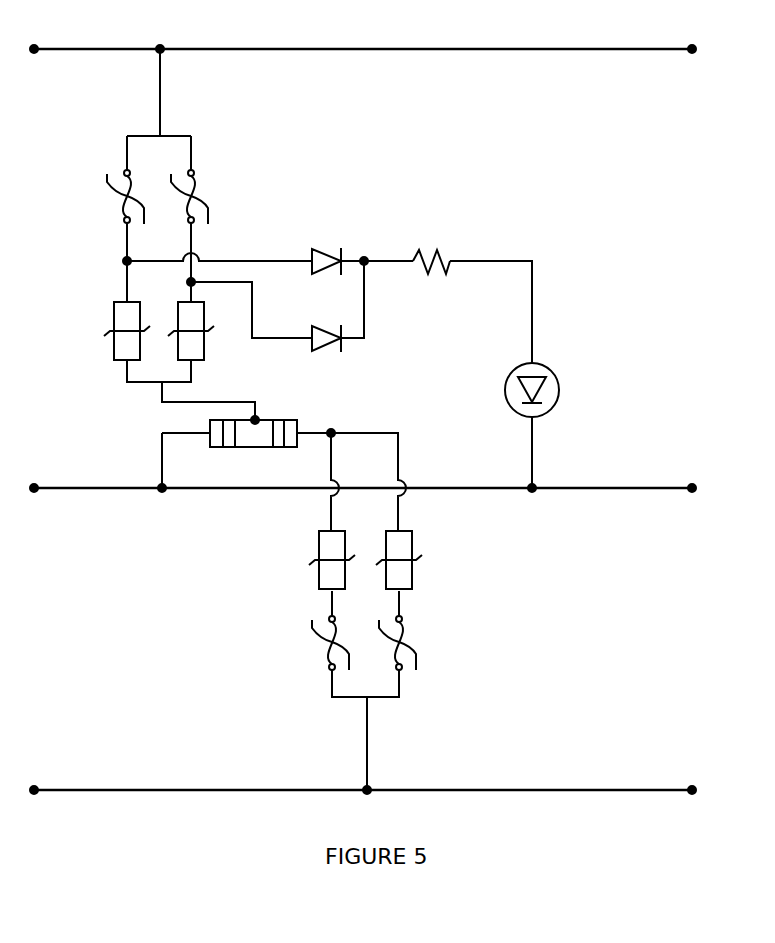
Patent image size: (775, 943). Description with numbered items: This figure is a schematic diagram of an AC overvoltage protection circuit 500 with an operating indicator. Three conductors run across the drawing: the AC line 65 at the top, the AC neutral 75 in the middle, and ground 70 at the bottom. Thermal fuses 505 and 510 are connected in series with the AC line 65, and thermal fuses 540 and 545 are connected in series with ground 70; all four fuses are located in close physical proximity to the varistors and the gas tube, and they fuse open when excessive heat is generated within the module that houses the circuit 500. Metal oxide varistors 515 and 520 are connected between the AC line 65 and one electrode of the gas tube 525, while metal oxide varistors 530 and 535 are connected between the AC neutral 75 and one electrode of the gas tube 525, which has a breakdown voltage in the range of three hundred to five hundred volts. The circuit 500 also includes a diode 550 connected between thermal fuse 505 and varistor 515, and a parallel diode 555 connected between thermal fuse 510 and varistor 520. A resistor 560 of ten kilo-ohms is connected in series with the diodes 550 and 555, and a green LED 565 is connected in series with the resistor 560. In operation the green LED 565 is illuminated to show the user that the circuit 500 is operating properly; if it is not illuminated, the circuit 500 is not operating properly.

The AC overvoltage protection circuit 500 is at (410, 49).
The AC line 65 is at (34, 49).
The AC neutral 75 is at (34, 488).
The ground 70 is at (34, 790).
The thermal fuse 505 is at (118, 198).
The thermal fuse 510 is at (205, 195).
The metal oxide varistor 515 is at (125, 300).
The metal oxide varistor 520 is at (187, 300).
The gas tube 525 is at (253, 433).
The metal oxide varistor 530 is at (330, 530).
The metal oxide varistor 535 is at (405, 530).
The thermal fuse 540 is at (320, 645).
The thermal fuse 545 is at (410, 643).
The diode 550 is at (338, 261).
The diode 555 is at (338, 306).
The resistor 560 is at (413, 256).
The green LED 565 is at (546, 366).